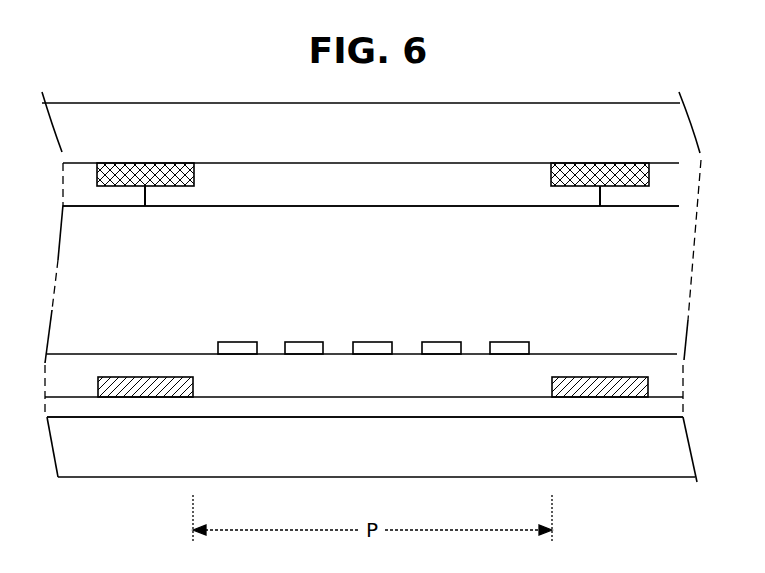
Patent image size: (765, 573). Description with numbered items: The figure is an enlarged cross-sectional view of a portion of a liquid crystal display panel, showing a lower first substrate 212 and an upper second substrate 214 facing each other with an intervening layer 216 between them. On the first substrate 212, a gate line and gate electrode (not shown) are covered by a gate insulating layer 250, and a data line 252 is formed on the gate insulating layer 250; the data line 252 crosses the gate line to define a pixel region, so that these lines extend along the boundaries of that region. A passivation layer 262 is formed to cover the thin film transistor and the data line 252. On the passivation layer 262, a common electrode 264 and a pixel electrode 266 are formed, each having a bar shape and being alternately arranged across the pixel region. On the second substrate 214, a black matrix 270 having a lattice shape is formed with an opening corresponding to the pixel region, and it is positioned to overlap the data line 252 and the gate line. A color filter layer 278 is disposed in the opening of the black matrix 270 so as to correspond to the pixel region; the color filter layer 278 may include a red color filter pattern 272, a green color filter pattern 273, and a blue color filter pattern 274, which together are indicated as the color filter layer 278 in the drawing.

The first substrate 212 is at (630, 459).
The second substrate 214 is at (630, 153).
The liquid crystal layer 216 is at (630, 291).
The gate insulating layer 250 is at (467, 405).
The data line 252 is at (140, 392).
The passivation layer 262 is at (270, 392).
The common electrode 264 is at (238, 354).
The pixel electrode 266 is at (305, 354).
The black matrix 270 is at (157, 163).
The red color filter pattern 272 is at (118, 200).
The green color filter pattern 273 is at (628, 200).
The blue color filter pattern 274 is at (374, 192).
The color filter layer 278 is at (470, 250).